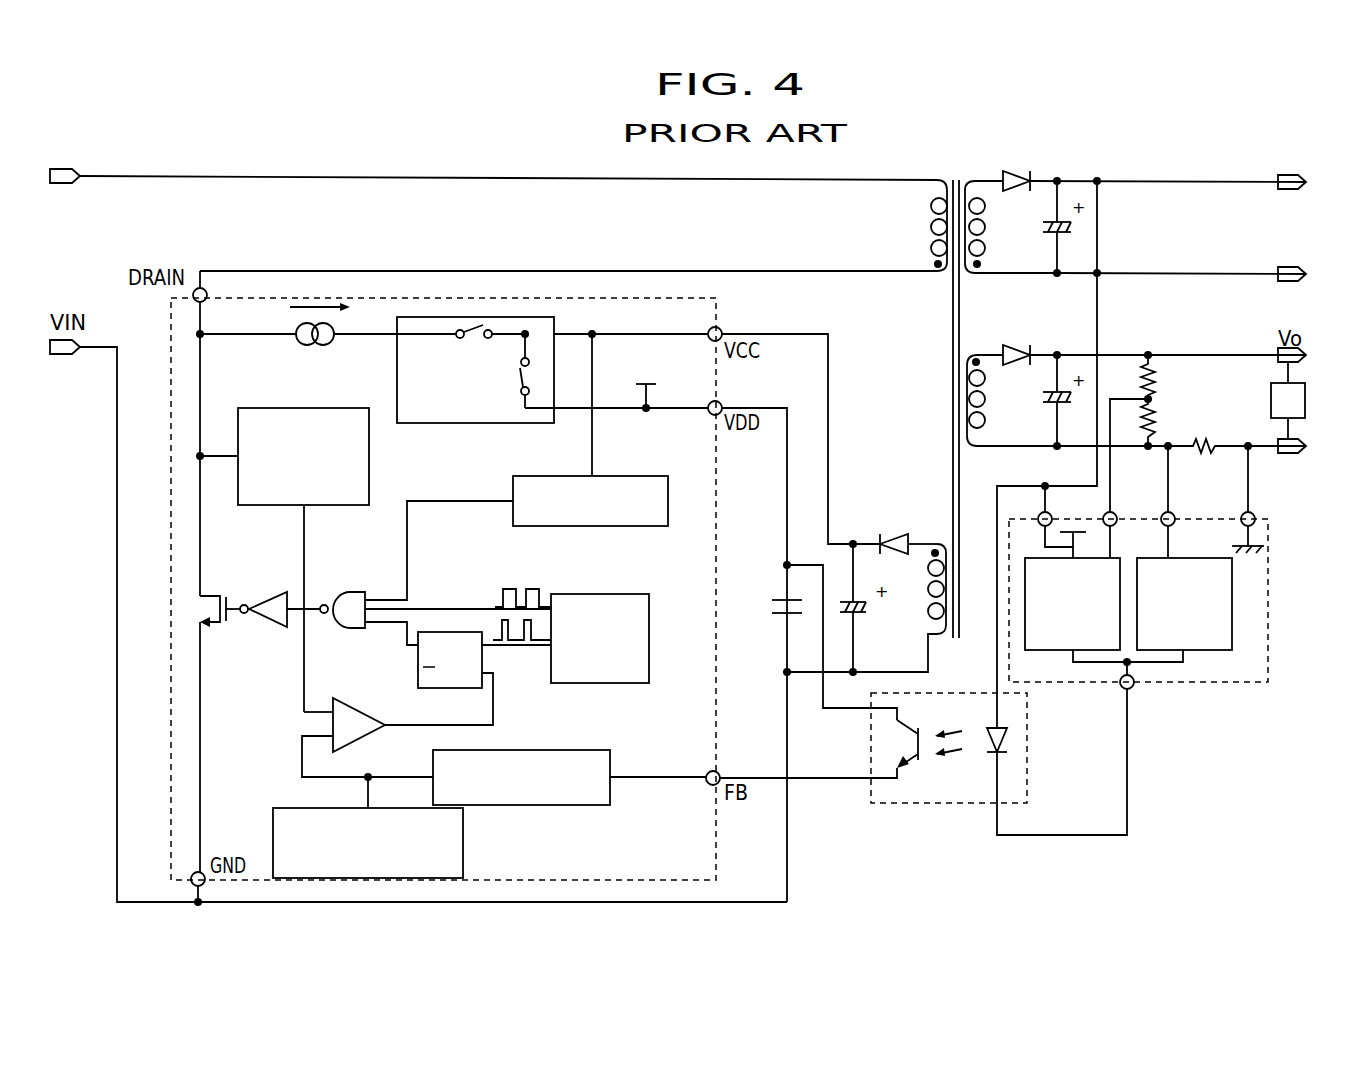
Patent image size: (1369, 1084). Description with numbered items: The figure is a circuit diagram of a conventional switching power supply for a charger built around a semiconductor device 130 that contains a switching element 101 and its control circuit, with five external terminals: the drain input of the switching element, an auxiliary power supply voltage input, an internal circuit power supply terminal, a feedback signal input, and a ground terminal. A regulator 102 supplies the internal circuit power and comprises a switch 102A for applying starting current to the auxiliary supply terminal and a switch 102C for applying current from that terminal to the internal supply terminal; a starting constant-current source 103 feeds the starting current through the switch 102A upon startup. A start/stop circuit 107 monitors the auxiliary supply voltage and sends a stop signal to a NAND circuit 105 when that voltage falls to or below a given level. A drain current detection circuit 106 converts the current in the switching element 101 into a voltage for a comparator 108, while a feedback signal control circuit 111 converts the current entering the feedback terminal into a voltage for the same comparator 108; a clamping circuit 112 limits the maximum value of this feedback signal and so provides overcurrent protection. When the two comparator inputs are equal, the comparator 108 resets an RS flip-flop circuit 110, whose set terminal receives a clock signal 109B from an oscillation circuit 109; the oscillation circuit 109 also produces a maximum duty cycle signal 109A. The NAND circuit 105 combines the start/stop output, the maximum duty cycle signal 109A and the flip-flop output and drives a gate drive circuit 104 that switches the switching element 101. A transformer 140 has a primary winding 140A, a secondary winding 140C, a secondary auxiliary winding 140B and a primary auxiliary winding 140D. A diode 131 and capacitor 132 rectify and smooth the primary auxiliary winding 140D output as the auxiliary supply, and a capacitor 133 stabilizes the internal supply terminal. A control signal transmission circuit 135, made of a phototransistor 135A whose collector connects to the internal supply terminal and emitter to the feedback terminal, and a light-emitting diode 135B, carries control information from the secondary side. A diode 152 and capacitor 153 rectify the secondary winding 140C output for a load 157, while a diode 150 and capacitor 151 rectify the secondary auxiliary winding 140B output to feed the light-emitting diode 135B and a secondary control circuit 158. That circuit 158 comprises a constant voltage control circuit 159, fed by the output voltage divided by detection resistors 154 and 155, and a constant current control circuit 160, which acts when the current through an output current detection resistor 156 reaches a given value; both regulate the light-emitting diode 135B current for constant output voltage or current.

The switching element 101 is at (215, 626).
The regulator 102 is at (536, 322).
The switch 102A is at (466, 328).
The switch 102C is at (520, 374).
The starting constant-current source 103 is at (308, 345).
The gate drive circuit 104 is at (268, 628).
The NAND circuit 105 is at (352, 592).
The drain current detection circuit 106 is at (277, 506).
The start/stop circuit 107 is at (635, 475).
The comparator 108 is at (360, 740).
The oscillation circuit 109 is at (557, 642).
The maximum duty cycle signal 109A is at (504, 588).
The clock signal 109B is at (500, 625).
The RS flip-flop circuit 110 is at (418, 686).
The feedback signal control circuit 111 is at (520, 806).
The clamping circuit 112 is at (290, 808).
The semiconductor device 130 is at (328, 297).
The diode 131 is at (893, 533).
The capacitor 132 is at (850, 614).
The capacitor 133 is at (780, 598).
The control signal transmission circuit 135 is at (1105, 770).
The phototransistor 135A is at (910, 732).
The light-emitting diode 135B is at (1007, 738).
The transformer 140 is at (957, 172).
The primary winding 140A is at (931, 227).
The secondary auxiliary winding 140B is at (983, 230).
The secondary winding 140C is at (978, 350).
The primary auxiliary winding 140D is at (930, 607).
The diode 150 is at (1013, 170).
The capacitor 151 is at (1062, 220).
The diode 152 is at (1032, 348).
The capacitor 153 is at (1045, 404).
The detection resistor 154 is at (1155, 354).
The detection resistor 155 is at (1155, 417).
The output current detection resistor 156 is at (1218, 450).
The load 157 is at (1306, 400).
The secondary control circuit 158 is at (1187, 652).
The constant voltage control circuit 159 is at (1055, 651).
The constant current control circuit 160 is at (1232, 605).